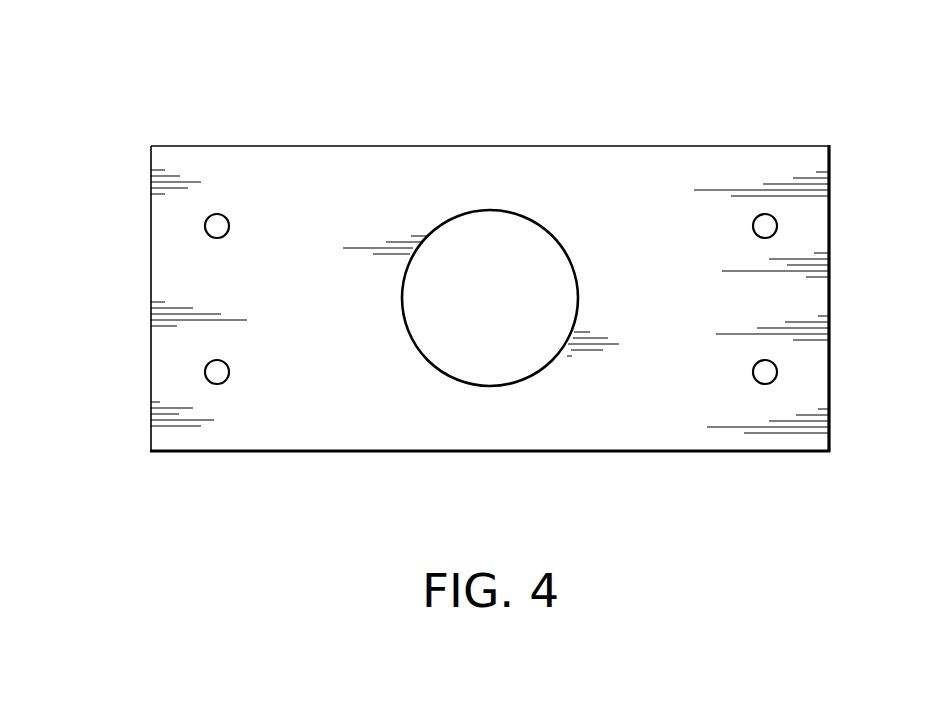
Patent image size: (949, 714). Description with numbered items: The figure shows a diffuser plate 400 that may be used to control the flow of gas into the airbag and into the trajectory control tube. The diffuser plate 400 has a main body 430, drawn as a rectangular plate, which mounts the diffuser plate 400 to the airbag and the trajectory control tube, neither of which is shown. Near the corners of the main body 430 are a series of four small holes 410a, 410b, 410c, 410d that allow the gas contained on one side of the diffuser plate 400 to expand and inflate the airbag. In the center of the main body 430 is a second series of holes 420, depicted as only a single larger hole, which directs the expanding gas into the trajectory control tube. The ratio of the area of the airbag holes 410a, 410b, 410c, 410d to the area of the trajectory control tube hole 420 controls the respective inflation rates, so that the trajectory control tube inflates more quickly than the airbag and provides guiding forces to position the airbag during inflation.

The diffuser plate 400 is at (926, 67).
The main body 430 is at (620, 180).
The second series of holes 420 is at (525, 356).
The hole 410a is at (770, 374).
The hole 410b is at (770, 228).
The hole 410c is at (208, 375).
The hole 410d is at (208, 229).